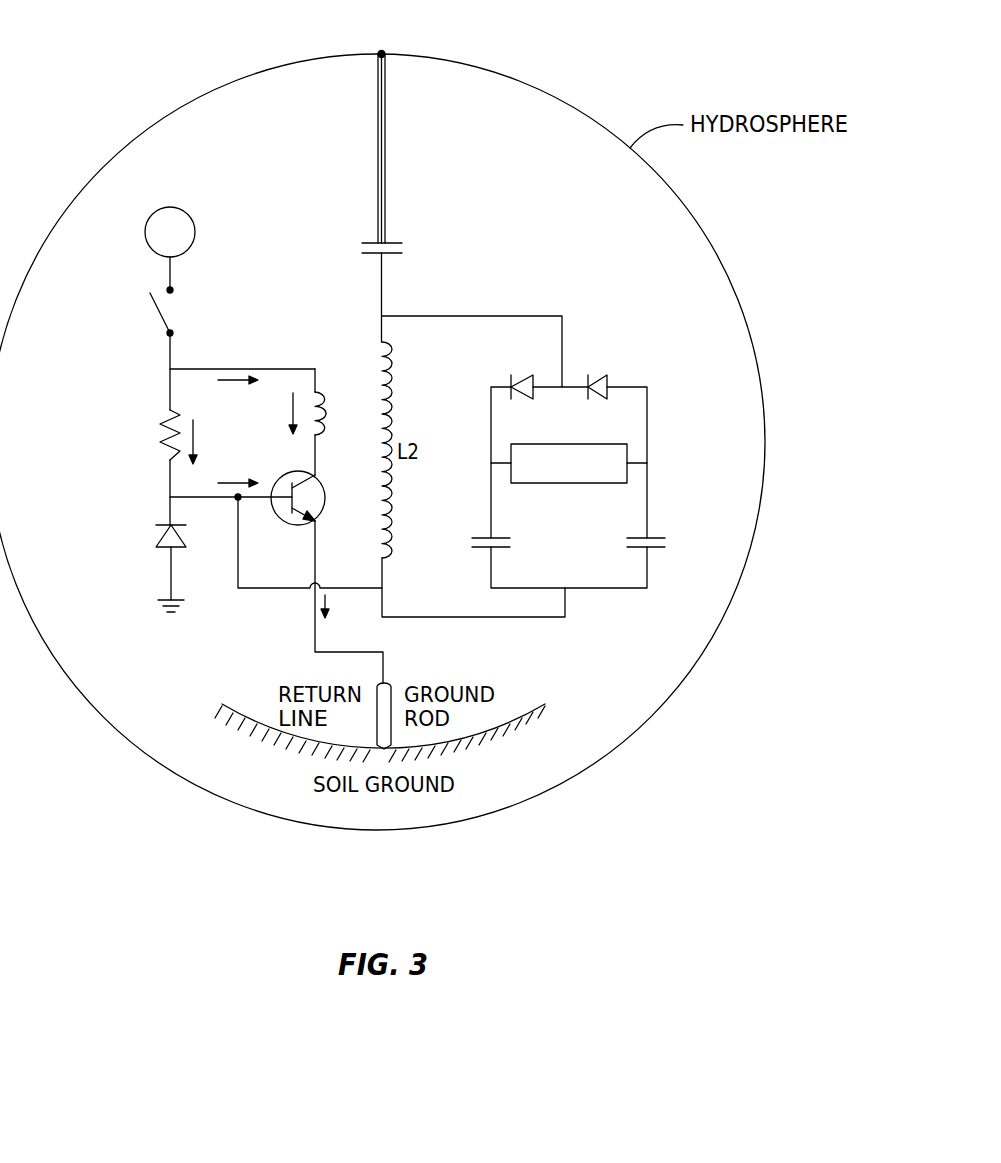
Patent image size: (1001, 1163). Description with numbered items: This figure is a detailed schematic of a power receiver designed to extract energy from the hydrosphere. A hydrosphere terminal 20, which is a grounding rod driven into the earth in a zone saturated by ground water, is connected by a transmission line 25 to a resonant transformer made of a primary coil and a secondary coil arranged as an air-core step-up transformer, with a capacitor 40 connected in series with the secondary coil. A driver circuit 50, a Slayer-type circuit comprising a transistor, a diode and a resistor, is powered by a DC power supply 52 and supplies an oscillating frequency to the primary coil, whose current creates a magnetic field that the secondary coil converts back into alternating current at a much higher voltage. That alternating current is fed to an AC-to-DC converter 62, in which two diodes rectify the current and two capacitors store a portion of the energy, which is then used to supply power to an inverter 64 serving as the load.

The hydrosphere terminal 20 is at (386, 50).
The transmission line 25 is at (386, 150).
The capacitor 40 is at (400, 228).
The driver circuit 50 is at (240, 424).
The DC power supply 52 is at (150, 220).
The AC-to-DC converter 62 is at (568, 423).
The inverter 64 is at (585, 483).